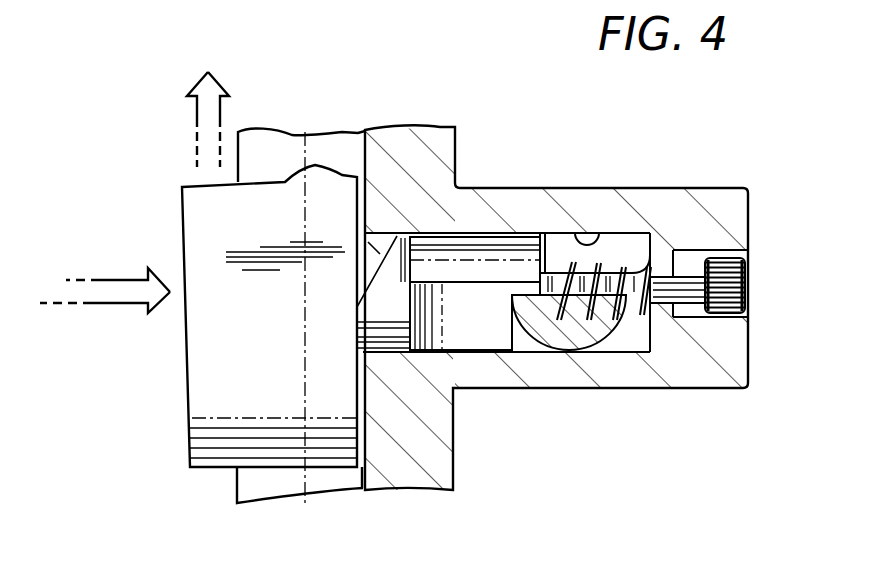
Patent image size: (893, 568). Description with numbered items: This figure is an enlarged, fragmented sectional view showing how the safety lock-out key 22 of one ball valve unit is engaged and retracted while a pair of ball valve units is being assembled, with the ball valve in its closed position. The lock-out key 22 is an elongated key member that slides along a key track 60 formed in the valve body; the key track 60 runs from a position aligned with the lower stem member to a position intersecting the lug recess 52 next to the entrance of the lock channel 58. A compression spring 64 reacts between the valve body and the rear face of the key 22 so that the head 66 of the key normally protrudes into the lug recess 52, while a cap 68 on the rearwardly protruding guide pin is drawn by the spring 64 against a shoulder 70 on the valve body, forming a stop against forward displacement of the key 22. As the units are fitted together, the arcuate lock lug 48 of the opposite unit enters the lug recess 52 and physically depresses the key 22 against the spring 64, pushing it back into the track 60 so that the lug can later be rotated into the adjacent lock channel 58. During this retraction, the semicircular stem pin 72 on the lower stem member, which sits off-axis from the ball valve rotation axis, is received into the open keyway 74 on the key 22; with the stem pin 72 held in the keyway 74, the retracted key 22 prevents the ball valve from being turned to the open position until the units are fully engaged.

The safety lock-out key 22 is at (482, 340).
The lock lug 48 is at (203, 403).
The lug recess 52 is at (363, 485).
The lock channel 58 is at (372, 148).
The key track 60 is at (595, 190).
The compression spring 64 is at (637, 232).
The head 66 is at (365, 317).
The cap 68 is at (748, 292).
The shoulder 70 is at (672, 316).
The stem pin 72 is at (568, 328).
The keyway 74 is at (485, 233).